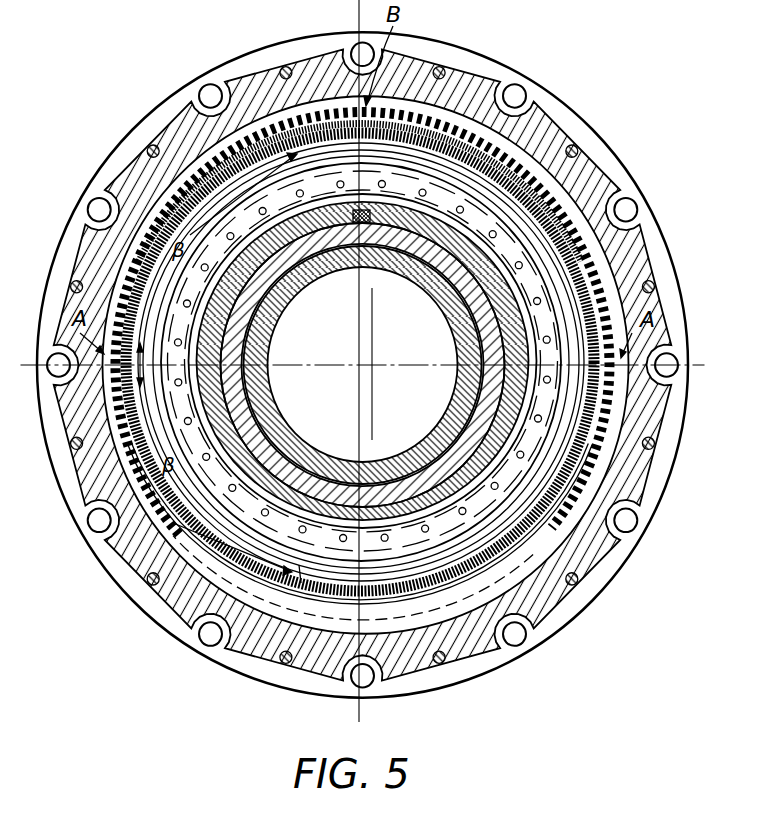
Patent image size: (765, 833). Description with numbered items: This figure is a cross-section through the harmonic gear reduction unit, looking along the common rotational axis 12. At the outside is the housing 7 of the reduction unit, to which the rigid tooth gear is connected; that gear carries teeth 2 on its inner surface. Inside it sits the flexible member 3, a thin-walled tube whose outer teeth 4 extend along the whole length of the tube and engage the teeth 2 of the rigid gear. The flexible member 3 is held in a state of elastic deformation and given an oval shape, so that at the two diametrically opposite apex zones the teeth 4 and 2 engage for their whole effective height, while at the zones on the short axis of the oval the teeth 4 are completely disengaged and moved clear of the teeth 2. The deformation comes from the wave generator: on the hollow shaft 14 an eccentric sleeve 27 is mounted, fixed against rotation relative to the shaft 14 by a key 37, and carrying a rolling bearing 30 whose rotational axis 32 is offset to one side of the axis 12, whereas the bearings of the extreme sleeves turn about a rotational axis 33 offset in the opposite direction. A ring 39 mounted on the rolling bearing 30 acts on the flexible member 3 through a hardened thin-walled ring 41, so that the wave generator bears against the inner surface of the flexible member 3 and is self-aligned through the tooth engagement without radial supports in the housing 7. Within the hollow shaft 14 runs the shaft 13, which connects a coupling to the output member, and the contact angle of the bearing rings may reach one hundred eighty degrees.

The teeth 2 is at (202, 163).
The flexible member 3 is at (387, 122).
The teeth 4 is at (432, 130).
The housing 7 is at (590, 160).
The rotational axis 12 is at (366, 361).
The shaft 13 is at (290, 297).
The shaft 14 is at (262, 430).
The eccentric sleeve 27 is at (262, 377).
The rolling bearing 30 is at (230, 477).
The axis of hub 32 is at (351, 359).
The rotational axis 33 is at (374, 367).
The key 37 is at (363, 222).
The ring 39 is at (443, 560).
The thin-walled ring 41 is at (603, 417).